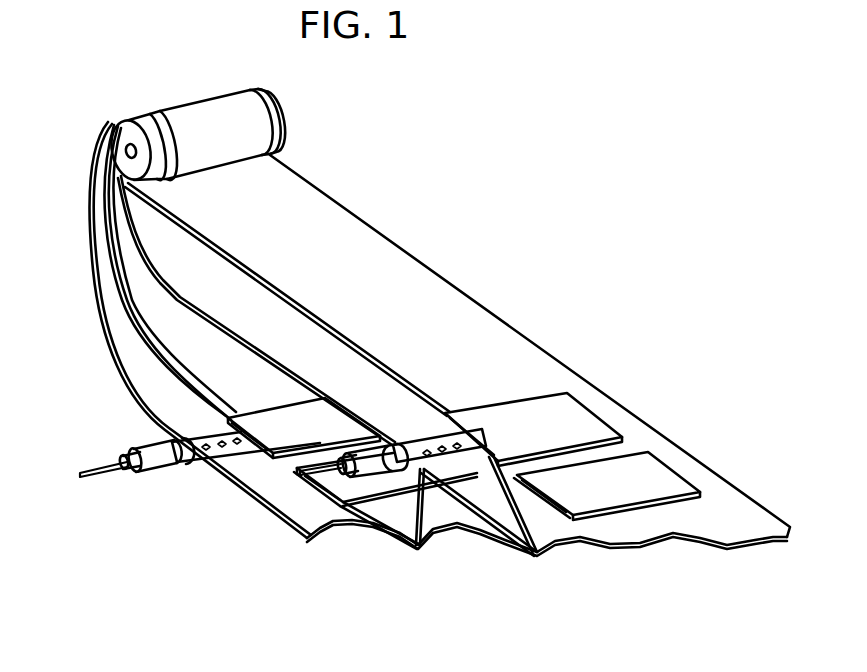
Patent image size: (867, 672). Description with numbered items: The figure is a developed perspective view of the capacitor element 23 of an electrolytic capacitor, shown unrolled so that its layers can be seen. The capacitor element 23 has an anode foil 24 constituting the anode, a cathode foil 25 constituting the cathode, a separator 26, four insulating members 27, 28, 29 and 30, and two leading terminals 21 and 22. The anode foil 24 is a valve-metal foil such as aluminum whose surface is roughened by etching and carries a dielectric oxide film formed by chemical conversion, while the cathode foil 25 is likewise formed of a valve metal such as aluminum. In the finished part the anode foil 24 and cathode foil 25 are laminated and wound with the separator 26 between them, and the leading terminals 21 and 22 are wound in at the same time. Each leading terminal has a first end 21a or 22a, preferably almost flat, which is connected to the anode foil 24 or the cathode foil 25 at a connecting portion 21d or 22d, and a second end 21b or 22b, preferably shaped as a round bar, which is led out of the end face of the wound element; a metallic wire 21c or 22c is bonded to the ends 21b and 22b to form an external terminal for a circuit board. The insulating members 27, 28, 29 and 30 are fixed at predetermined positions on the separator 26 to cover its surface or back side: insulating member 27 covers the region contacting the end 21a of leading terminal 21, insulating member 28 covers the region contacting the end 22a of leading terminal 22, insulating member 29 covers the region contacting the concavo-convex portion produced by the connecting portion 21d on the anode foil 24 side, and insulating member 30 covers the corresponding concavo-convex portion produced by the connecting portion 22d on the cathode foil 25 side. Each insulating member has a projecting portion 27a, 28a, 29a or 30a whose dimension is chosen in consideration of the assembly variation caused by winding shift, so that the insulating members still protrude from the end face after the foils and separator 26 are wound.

The leading terminal 21 is at (479, 320).
The end of leading terminal 21a is at (424, 441).
The end of leading terminal 21b is at (392, 447).
The metallic wire 21c is at (338, 468).
The connecting portion 21d is at (488, 421).
The leading terminal 22 is at (107, 509).
The end of leading terminal 22a is at (188, 453).
The end of leading terminal 22b is at (153, 460).
The metallic wire 22c is at (80, 473).
The connecting portion 22d is at (220, 442).
The capacitor element 23 is at (302, 117).
The anode foil 24 is at (540, 513).
The cathode foil 25 is at (318, 505).
The separator 26 is at (443, 510).
The insulating member 27 is at (558, 417).
The projecting portion 27a is at (490, 437).
The insulating member 28 is at (293, 415).
The projecting portion 28a is at (253, 423).
The insulating member 29 is at (378, 487).
The projecting portion 29a is at (345, 488).
The insulating member 30 is at (650, 478).
The projecting portion 30a is at (570, 497).